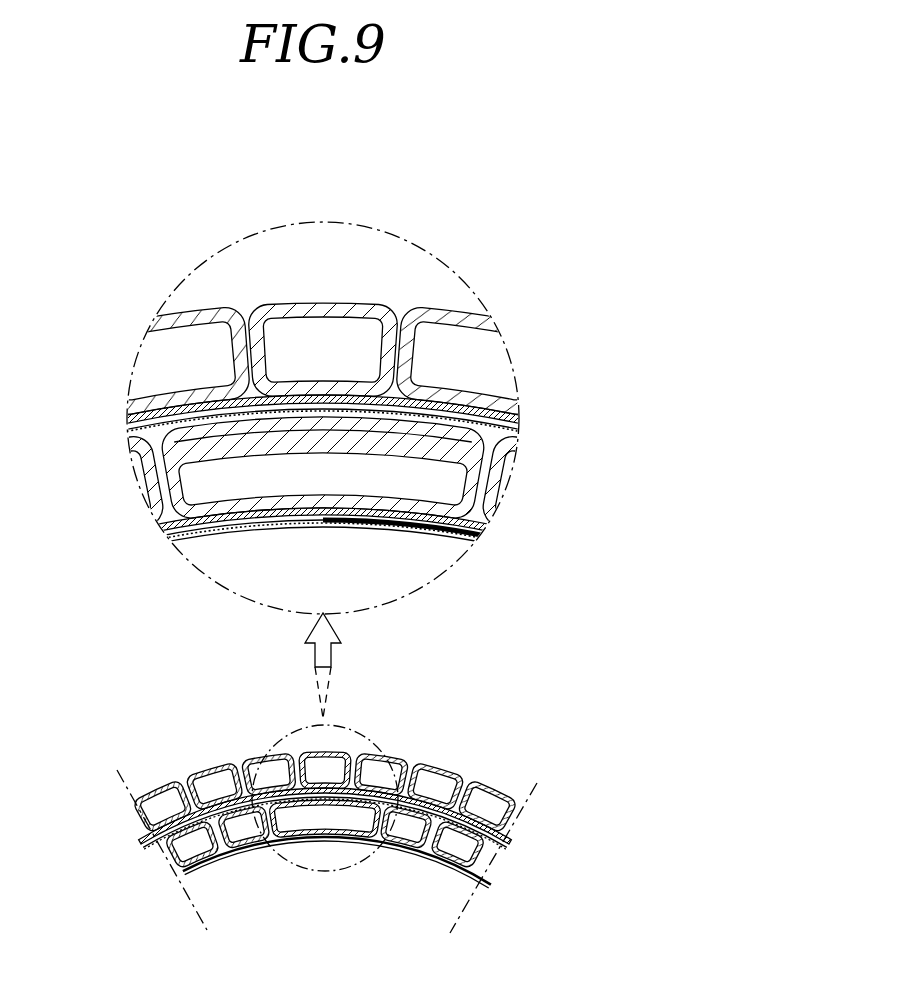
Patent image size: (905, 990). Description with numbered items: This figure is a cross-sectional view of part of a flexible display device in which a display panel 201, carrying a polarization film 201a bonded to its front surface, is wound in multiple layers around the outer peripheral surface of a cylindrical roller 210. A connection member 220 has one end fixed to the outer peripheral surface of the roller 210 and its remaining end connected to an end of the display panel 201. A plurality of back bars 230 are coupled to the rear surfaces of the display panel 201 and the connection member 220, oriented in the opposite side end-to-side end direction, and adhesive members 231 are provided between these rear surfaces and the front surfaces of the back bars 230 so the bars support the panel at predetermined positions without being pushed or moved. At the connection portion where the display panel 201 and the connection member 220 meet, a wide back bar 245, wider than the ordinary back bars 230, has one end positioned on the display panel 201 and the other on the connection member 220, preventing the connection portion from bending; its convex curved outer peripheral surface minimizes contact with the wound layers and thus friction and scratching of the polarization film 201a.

The display panel 201 is at (522, 427).
The polarization film 201a is at (522, 434).
The roller 210 is at (412, 532).
The connection member 220 is at (490, 543).
The back bars 230 is at (463, 322).
The adhesive members 231 is at (522, 421).
The wide back bar 245 is at (255, 508).